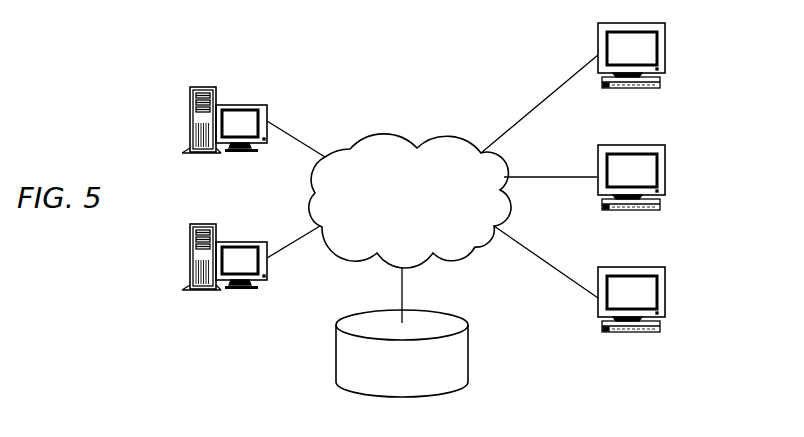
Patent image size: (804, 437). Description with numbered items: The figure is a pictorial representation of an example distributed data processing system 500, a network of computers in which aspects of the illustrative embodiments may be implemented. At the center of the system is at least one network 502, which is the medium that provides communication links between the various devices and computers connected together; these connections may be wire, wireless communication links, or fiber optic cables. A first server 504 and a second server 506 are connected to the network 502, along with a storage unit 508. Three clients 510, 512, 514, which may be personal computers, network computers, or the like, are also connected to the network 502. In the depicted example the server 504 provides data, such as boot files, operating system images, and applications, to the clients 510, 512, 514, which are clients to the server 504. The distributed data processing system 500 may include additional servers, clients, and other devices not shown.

The distributed data processing system 500 is at (483, 57).
The network 502 is at (390, 135).
The server 504 is at (190, 120).
The server 506 is at (190, 262).
The storage unit 508 is at (337, 350).
The client 510 is at (665, 55).
The client 512 is at (665, 178).
The client 514 is at (665, 300).